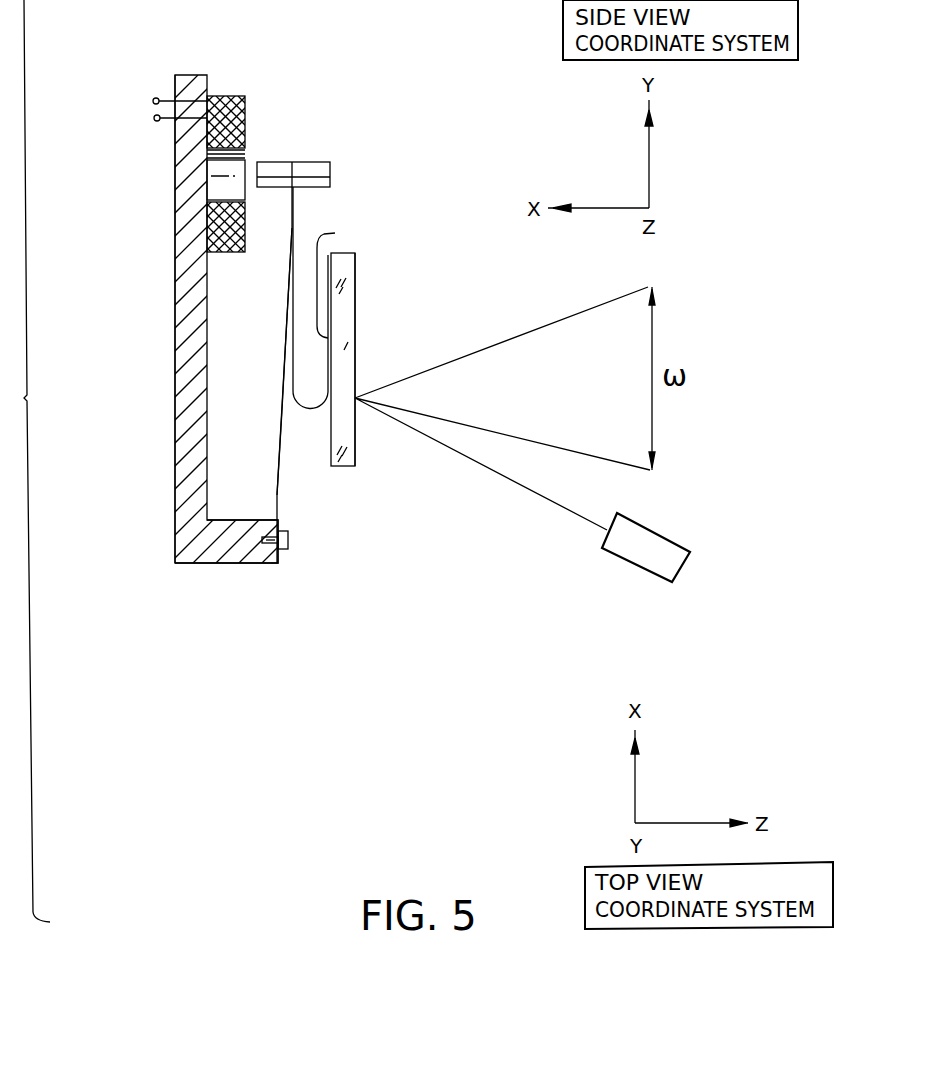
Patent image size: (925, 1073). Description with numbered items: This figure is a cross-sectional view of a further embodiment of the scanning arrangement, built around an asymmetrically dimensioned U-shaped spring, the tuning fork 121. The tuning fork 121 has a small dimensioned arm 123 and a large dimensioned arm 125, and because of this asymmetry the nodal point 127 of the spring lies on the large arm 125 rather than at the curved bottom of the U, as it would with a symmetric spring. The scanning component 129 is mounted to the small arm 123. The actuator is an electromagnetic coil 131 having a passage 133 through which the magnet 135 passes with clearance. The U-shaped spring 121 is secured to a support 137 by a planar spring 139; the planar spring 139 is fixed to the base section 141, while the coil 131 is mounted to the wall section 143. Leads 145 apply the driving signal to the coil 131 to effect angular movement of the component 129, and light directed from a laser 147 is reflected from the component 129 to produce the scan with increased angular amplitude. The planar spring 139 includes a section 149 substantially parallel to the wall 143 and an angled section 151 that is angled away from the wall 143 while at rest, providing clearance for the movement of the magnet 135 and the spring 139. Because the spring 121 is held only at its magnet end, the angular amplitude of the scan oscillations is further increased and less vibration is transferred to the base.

The tuning fork 121 is at (315, 410).
The small dimensioned arm 123 is at (335, 233).
The large dimensioned arm 125 is at (297, 255).
The nodal point 127 is at (290, 385).
The component 129 is at (356, 290).
The electromagnetic coil 131 is at (233, 96).
The passage 133 is at (245, 157).
The magnet 135 is at (298, 162).
The support 137 is at (185, 445).
The planar spring 139 is at (283, 338).
The base section 141 is at (230, 563).
The wall section 143 is at (176, 300).
The leads 145 is at (150, 88).
The laser 147 is at (685, 570).
The section 149 is at (277, 468).
The angled section 151 is at (283, 290).